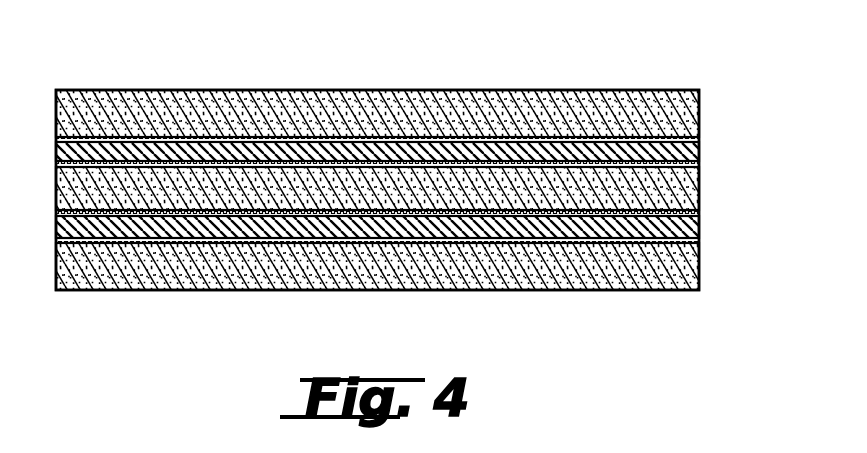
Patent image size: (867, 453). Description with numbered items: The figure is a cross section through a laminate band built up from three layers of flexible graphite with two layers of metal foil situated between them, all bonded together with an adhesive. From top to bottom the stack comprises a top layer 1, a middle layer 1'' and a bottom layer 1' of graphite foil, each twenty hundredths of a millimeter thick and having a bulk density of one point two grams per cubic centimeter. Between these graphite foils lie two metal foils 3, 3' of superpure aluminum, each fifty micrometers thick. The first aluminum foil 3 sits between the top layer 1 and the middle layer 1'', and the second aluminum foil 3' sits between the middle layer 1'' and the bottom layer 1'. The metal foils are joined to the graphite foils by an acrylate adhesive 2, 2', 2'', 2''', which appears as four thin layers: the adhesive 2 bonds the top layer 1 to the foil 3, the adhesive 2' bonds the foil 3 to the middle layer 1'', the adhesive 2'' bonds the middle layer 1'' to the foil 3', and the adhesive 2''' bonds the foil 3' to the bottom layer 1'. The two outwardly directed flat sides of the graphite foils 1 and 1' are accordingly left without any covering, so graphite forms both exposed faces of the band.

The top layer 1 is at (412, 99).
The acrylate adhesive 2 is at (412, 117).
The metal foil 3 is at (412, 139).
The acrylate adhesive 2' is at (416, 161).
The middle layer 1'' is at (419, 188).
The acrylate adhesive 2'' is at (419, 221).
The metal foil 3' is at (416, 241).
The acrylate adhesive 2''' is at (423, 266).
The bottom layer 1' is at (416, 285).